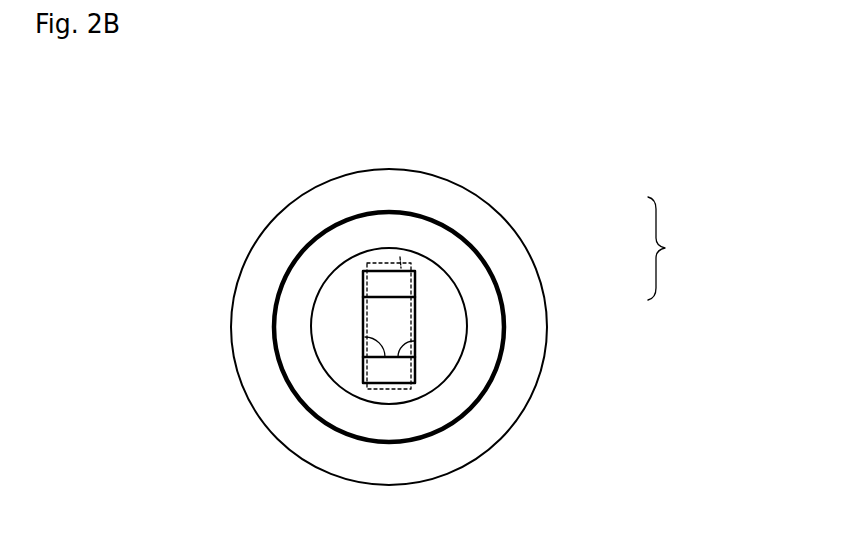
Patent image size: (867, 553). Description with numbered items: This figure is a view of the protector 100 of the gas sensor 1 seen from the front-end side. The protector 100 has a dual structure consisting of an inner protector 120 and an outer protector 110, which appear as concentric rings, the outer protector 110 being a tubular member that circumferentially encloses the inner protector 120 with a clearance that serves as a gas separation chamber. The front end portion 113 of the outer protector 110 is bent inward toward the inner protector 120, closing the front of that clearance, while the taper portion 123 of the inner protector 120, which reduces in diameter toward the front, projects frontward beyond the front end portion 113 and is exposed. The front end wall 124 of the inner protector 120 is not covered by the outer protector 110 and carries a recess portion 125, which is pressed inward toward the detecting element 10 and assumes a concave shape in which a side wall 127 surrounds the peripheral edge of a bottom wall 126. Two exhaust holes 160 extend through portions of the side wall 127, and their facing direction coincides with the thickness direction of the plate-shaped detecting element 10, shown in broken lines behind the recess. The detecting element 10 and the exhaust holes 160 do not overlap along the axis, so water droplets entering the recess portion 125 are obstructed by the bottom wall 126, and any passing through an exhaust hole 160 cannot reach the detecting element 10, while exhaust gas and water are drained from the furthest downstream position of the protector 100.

The gas sensor 1 is at (565, 142).
The detecting element 10 is at (362, 314).
The protector 100 is at (677, 248).
The outer protector 110 is at (552, 310).
The front end portion 113 is at (250, 313).
The inner protector 120 is at (492, 255).
The taper portion 123 is at (312, 383).
The front end wall 124 is at (450, 318).
The recess portion 125 is at (398, 286).
The bottom wall 126 is at (405, 369).
The side wall 127 is at (372, 275).
The exhaust hole 160 is at (384, 362).